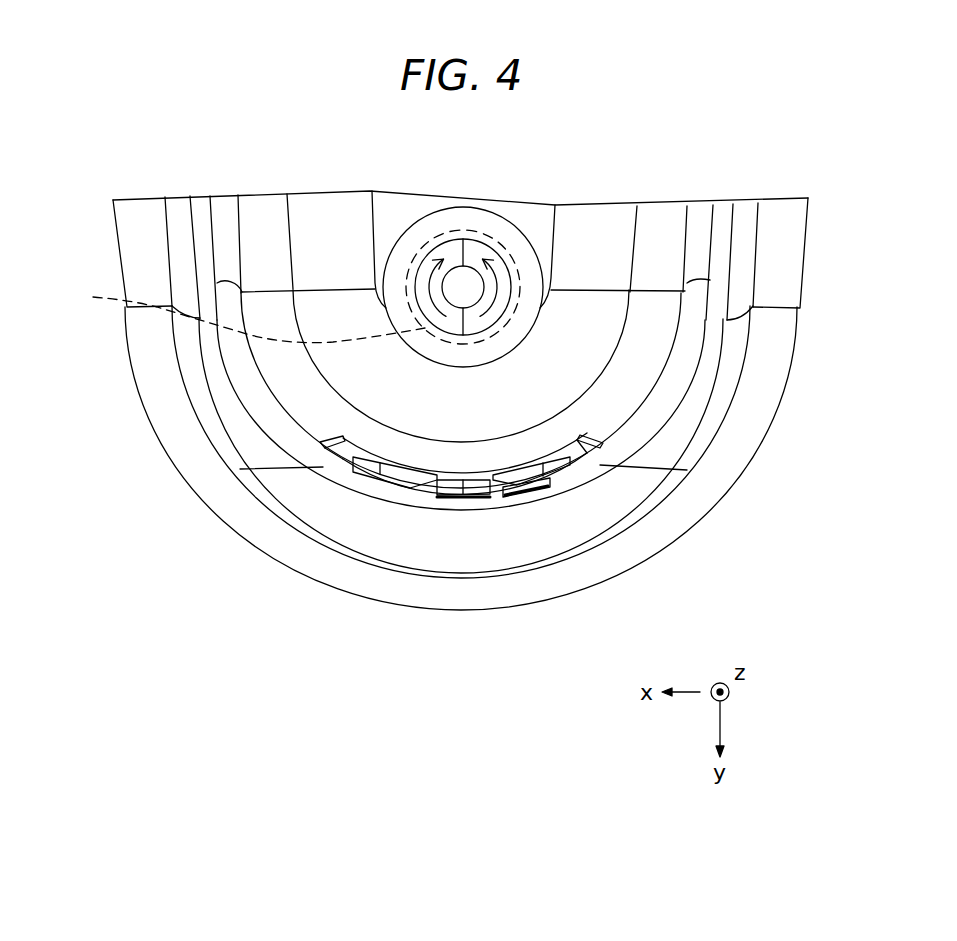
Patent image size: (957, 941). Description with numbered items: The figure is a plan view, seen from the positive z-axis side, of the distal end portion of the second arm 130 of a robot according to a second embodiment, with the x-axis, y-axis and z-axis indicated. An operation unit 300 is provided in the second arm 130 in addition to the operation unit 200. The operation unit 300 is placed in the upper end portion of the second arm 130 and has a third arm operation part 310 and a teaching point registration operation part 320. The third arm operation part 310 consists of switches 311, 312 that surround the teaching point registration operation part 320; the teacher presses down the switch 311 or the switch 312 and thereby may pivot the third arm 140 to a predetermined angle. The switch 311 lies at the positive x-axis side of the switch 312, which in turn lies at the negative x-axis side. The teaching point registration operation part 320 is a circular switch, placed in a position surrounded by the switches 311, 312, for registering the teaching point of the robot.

The second arm 130 is at (172, 426).
The third arm 140 is at (231, 313).
The operation unit 200 is at (443, 498).
The operation unit 300 is at (621, 327).
The third arm operation part 310 is at (636, 381).
The switch 311 is at (447, 323).
The switch 312 is at (497, 327).
The teaching point registration operation part 320 is at (457, 281).